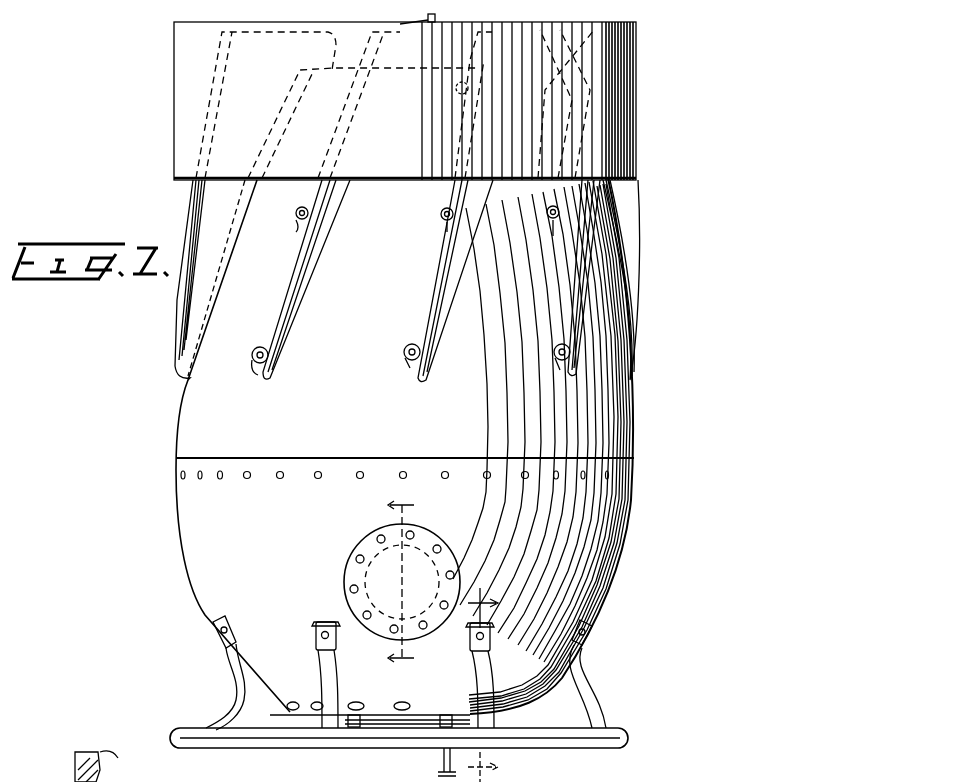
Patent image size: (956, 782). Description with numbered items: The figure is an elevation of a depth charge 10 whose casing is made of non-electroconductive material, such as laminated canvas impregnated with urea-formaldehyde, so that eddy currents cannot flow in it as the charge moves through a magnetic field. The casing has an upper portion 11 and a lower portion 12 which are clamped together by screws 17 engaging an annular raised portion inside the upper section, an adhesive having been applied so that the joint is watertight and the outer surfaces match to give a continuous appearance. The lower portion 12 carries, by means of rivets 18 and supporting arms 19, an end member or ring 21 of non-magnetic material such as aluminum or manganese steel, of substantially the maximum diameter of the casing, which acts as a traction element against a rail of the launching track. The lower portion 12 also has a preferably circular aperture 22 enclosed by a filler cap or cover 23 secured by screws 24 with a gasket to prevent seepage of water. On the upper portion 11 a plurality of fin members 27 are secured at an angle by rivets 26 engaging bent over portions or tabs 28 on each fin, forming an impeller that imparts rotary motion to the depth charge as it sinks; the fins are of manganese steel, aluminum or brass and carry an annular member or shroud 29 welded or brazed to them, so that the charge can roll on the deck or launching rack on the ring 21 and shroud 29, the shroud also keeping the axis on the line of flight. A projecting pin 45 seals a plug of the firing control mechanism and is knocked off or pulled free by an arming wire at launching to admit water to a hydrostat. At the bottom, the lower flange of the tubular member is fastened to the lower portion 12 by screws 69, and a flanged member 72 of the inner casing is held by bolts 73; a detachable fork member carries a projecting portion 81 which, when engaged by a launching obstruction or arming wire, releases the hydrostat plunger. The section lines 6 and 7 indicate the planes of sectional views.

The section line 6- 6 is at (409, 581).
The section line 7- 7 is at (476, 685).
The depth charge 10 is at (632, 420).
The upper portion 11 is at (183, 405).
The lower portion 12 is at (192, 572).
The screws 17 is at (245, 477).
The rivets 18 is at (372, 645).
The supporting arms 19 is at (224, 700).
The end member or ring 21 is at (244, 742).
The aperture 22 is at (452, 560).
The filler cap or cover 23 is at (356, 560).
The screws 24 is at (415, 534).
The rivets 26 is at (298, 218).
The fin members 27 is at (232, 246).
The bent over portions or tabs 28 is at (302, 208).
The annular member or shroud 29 is at (174, 122).
The projecting pin 45 is at (408, 35).
The screws 69 is at (318, 702).
The flanged member 72 is at (382, 726).
The bolts 73 is at (354, 728).
The projecting portion 81 is at (442, 760).